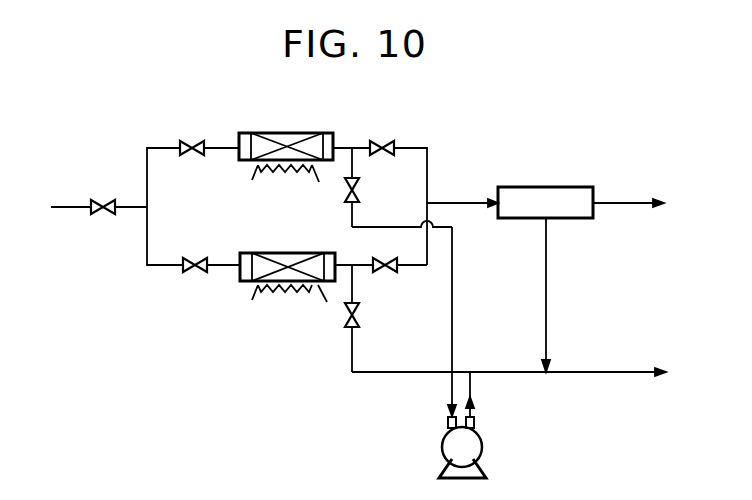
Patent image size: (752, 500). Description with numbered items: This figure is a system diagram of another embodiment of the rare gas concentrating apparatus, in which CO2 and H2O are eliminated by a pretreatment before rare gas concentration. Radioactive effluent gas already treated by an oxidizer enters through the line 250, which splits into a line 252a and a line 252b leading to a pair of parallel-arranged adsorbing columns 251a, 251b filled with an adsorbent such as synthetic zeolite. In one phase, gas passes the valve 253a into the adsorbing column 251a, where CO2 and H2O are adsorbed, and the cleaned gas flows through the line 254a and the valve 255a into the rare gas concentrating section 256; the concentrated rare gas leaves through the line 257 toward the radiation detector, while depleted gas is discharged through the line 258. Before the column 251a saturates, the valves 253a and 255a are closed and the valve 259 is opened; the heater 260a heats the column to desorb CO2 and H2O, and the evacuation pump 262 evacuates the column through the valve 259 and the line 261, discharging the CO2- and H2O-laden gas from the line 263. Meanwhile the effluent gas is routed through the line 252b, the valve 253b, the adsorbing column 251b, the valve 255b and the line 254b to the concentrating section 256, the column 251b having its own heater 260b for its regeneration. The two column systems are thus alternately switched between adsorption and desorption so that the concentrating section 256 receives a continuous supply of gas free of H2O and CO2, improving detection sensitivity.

The line 250 is at (66, 208).
The adsorbing column 251a is at (283, 132).
The adsorbing column 251b is at (284, 252).
The first branch line 252a is at (148, 180).
The line 252b is at (148, 227).
The valve 253a is at (193, 141).
The valve 253b is at (194, 272).
The line 254a is at (358, 147).
The line 254b is at (430, 247).
The valve 255a is at (389, 140).
The valve 255b is at (388, 272).
The rare gas concentrating section 256 is at (549, 186).
The line 257 is at (622, 203).
The line 258 is at (549, 320).
The valve 259 is at (357, 184).
The heater 260a is at (252, 180).
The second heater 260b is at (252, 300).
The line 261 is at (454, 320).
The evacuation pump 262 is at (489, 452).
The line 263 is at (620, 374).